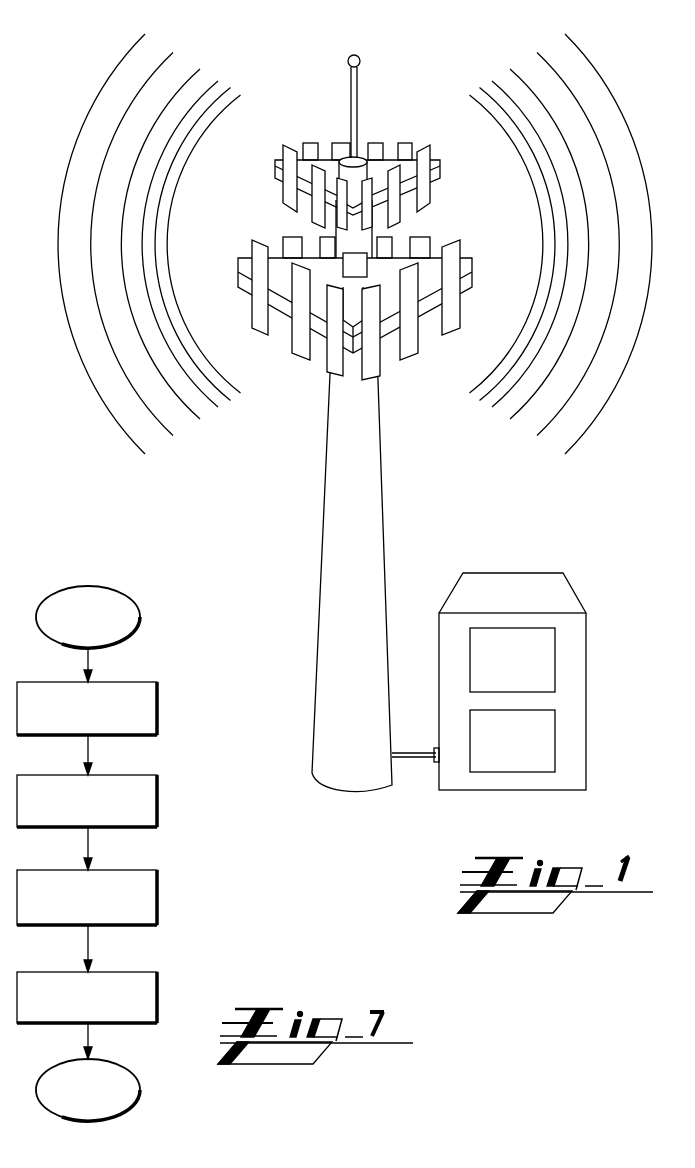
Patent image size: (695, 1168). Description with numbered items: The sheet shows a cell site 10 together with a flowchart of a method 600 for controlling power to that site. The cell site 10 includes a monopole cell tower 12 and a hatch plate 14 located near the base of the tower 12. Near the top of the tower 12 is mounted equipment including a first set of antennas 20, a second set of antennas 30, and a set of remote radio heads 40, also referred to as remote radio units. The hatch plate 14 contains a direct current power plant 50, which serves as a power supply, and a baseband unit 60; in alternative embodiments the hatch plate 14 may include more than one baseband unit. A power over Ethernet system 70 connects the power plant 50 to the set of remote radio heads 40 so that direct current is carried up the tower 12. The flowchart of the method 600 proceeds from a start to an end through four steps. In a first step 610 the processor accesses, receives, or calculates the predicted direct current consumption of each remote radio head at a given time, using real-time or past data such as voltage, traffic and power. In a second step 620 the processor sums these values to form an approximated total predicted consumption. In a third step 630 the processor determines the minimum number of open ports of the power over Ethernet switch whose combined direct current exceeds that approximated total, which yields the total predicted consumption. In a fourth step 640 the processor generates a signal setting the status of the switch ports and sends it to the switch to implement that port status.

In FIG. 1, the cell site 10 is at (210, 208).
In FIG. 1, the monopole cell tower 12 is at (365, 533).
In FIG. 1, the hatch plate 14 is at (515, 629).
In FIG. 1, the first set of antennas 20 is at (403, 110).
In FIG. 1, the second set of antennas 30 is at (398, 387).
In FIG. 1, the set of remote radio heads 40 is at (368, 253).
In FIG. 1, the direct current power plant 50 is at (528, 673).
In FIG. 1, the baseband unit 60 is at (528, 755).
In FIG. 1, the power over Ethernet system 70 is at (318, 489).
In FIG. 7, the method 600 is at (126, 846).
In FIG. 7, the first step 610 is at (61, 721).
In FIG. 7, the second step 620 is at (61, 813).
In FIG. 7, the third step 630 is at (61, 910).
In FIG. 7, the fourth step 640 is at (61, 1010).